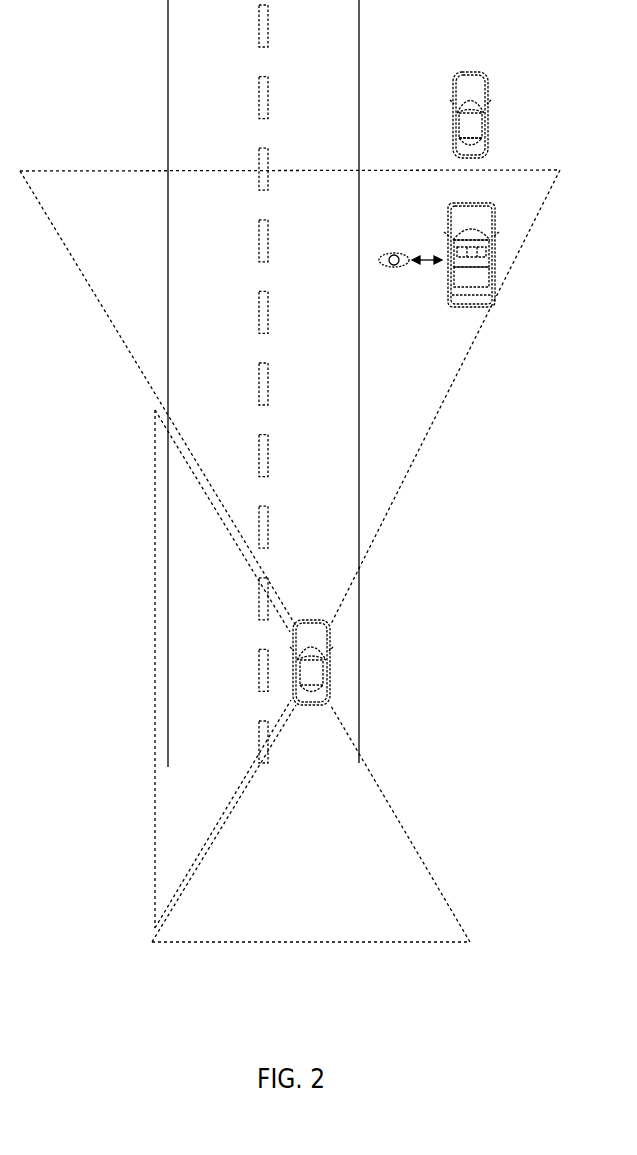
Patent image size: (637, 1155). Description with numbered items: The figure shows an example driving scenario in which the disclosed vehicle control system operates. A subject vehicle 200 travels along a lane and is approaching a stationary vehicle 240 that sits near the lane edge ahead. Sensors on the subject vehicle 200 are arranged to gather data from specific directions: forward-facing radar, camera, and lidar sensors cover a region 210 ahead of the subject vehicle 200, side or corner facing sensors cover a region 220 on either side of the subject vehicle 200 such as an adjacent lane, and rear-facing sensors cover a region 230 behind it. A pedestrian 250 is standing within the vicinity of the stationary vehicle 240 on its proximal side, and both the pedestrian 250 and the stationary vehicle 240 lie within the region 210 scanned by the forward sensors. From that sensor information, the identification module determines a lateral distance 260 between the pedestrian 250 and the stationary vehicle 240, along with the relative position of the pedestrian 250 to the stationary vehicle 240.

The subject vehicle 200 is at (328, 682).
The region ahead of the subject vehicle 210 is at (375, 528).
The region on either side of the subject vehicle 220 is at (182, 572).
The region behind the subject vehicle 230 is at (395, 842).
The stationary vehicle 240 is at (497, 277).
The pedestrian 250 is at (377, 262).
The lateral distance 260 is at (428, 267).